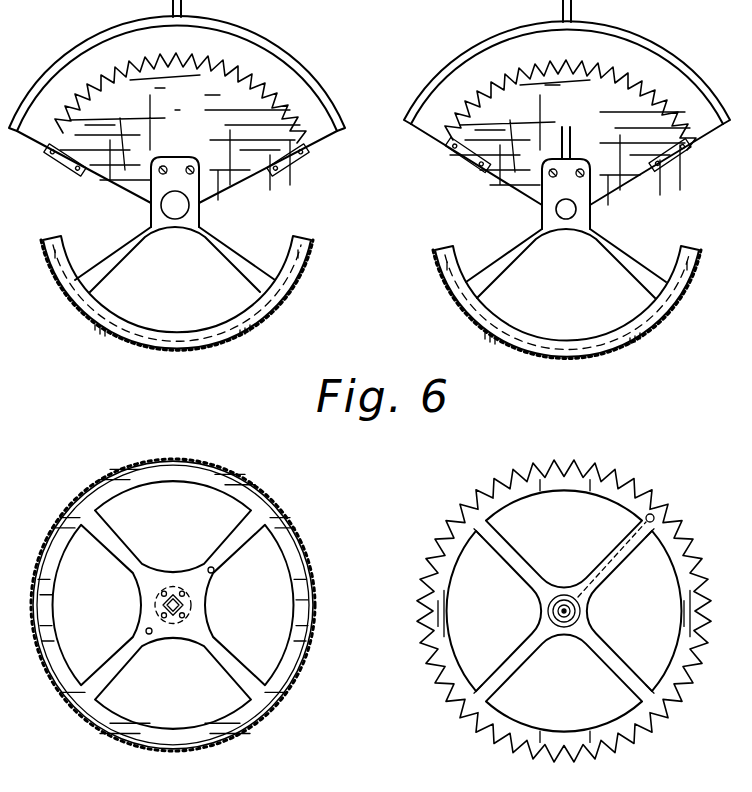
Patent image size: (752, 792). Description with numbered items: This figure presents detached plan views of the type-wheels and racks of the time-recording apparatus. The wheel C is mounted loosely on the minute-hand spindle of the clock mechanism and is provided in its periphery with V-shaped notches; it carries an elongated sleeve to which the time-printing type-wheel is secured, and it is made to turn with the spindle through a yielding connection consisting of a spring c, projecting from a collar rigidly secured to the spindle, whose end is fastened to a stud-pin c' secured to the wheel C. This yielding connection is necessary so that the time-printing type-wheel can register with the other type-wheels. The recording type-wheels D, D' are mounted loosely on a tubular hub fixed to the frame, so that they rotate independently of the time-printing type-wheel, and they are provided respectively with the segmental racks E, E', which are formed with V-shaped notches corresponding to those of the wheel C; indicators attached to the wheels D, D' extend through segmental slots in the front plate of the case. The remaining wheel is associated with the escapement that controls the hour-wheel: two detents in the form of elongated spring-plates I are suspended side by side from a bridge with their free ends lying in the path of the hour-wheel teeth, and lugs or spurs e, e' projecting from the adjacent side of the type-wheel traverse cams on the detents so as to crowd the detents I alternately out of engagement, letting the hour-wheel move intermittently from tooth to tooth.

The segmental rack E is at (180, 126).
The segmental rack E' is at (570, 132).
The recording type-wheel D is at (177, 306).
The recording type-wheel D' is at (567, 315).
The detent I is at (173, 605).
The lug or spur e is at (201, 557).
The pin e' is at (136, 618).
The wheel C is at (564, 611).
The spring c is at (564, 593).
The stud-pin c' is at (616, 553).